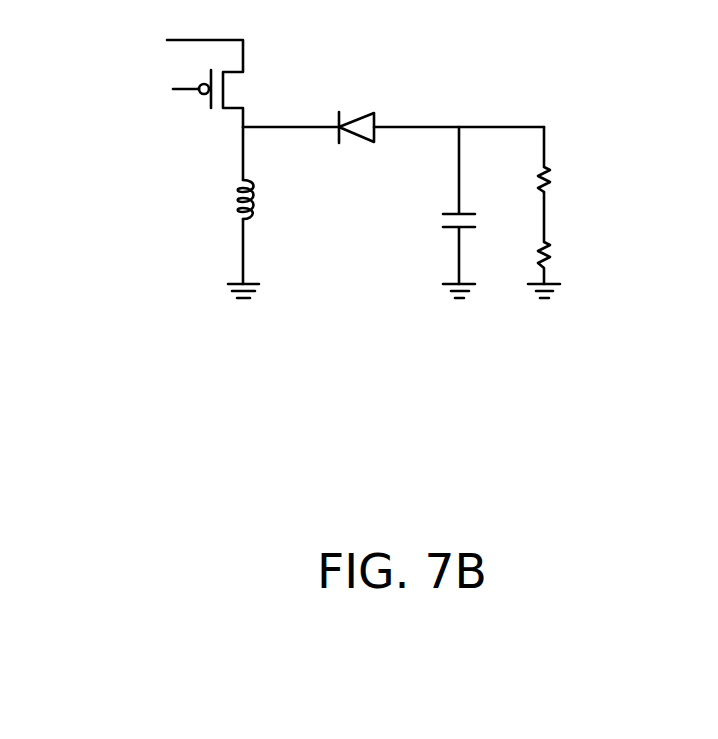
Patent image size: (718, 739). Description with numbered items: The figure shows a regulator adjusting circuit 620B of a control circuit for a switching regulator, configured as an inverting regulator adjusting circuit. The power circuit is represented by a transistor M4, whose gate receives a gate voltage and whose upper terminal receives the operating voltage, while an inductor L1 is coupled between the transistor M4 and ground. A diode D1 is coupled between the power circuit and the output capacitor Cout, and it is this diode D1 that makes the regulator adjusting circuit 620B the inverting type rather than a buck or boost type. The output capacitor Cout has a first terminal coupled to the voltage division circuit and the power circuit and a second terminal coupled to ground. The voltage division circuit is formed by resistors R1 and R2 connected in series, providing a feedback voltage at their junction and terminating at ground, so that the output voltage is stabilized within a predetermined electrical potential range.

The transistor M4 is at (227, 83).
The inductor L1 is at (259, 212).
The diode D1 is at (393, 111).
The output capacitor Cout is at (490, 212).
The resistor R1 is at (560, 162).
The resistor R2 is at (555, 245).
The regulator adjusting circuit 620B is at (418, 221).